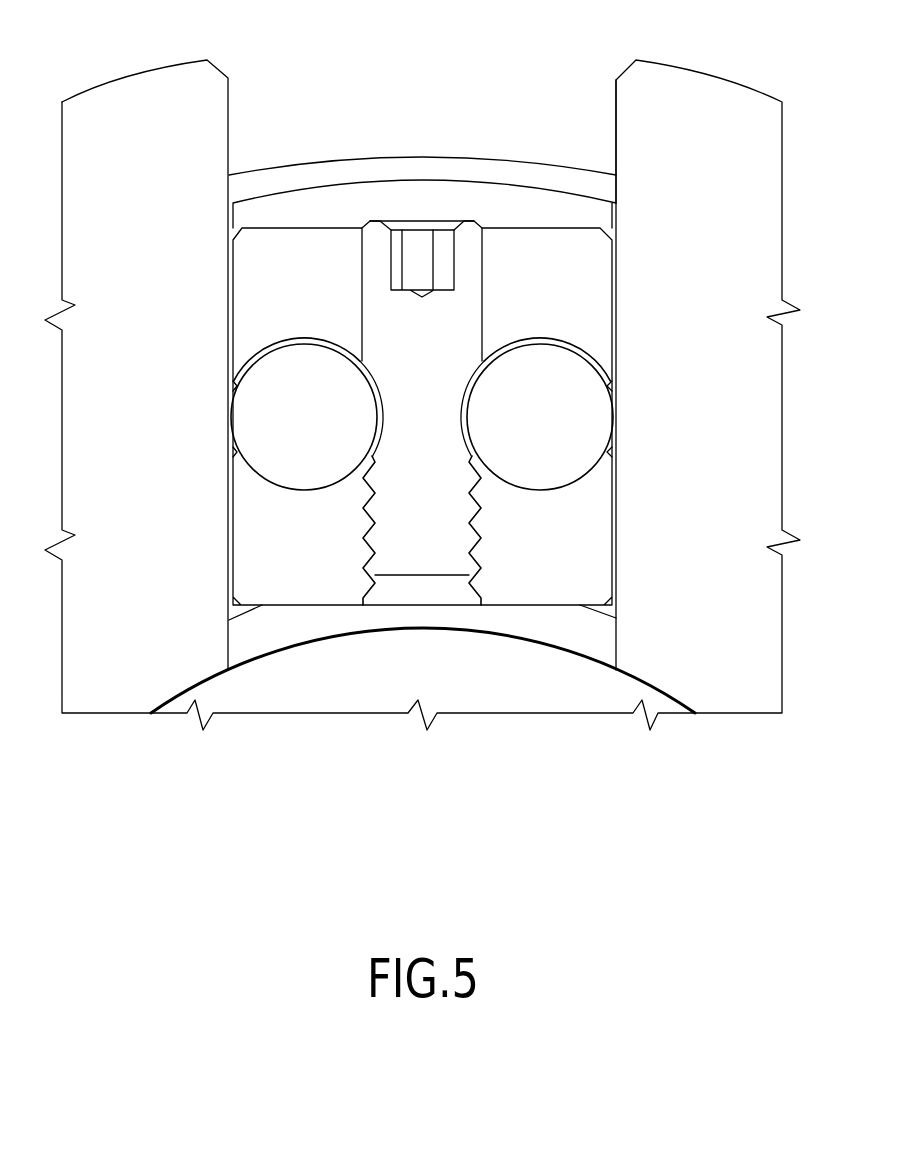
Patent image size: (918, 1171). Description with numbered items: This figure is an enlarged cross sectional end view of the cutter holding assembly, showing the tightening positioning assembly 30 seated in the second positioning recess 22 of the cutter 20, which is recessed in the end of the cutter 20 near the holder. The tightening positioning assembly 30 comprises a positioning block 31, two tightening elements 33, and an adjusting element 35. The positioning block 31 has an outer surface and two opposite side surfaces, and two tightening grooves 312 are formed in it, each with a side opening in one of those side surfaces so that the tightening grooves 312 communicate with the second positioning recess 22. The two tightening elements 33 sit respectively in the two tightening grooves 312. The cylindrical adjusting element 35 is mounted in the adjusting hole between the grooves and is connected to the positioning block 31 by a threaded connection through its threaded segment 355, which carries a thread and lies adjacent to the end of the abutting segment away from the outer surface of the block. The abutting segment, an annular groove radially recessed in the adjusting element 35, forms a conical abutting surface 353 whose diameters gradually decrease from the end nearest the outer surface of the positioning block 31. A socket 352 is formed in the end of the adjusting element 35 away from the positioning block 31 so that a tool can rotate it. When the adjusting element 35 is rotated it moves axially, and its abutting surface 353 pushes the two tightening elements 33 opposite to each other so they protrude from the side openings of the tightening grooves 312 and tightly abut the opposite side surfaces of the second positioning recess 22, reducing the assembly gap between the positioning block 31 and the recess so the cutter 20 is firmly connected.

The cutter 20 is at (725, 88).
The second positioning recess 22 is at (615, 113).
The tightening positioning assembly 30 is at (406, 344).
The positioning block 31 is at (302, 230).
The tightening elements 33 is at (300, 457).
The adjusting element 35 is at (473, 226).
The tightening grooves 312 is at (293, 343).
The socket 352 is at (448, 247).
The abutting surface 353 is at (367, 383).
The threaded segment 355 is at (373, 520).